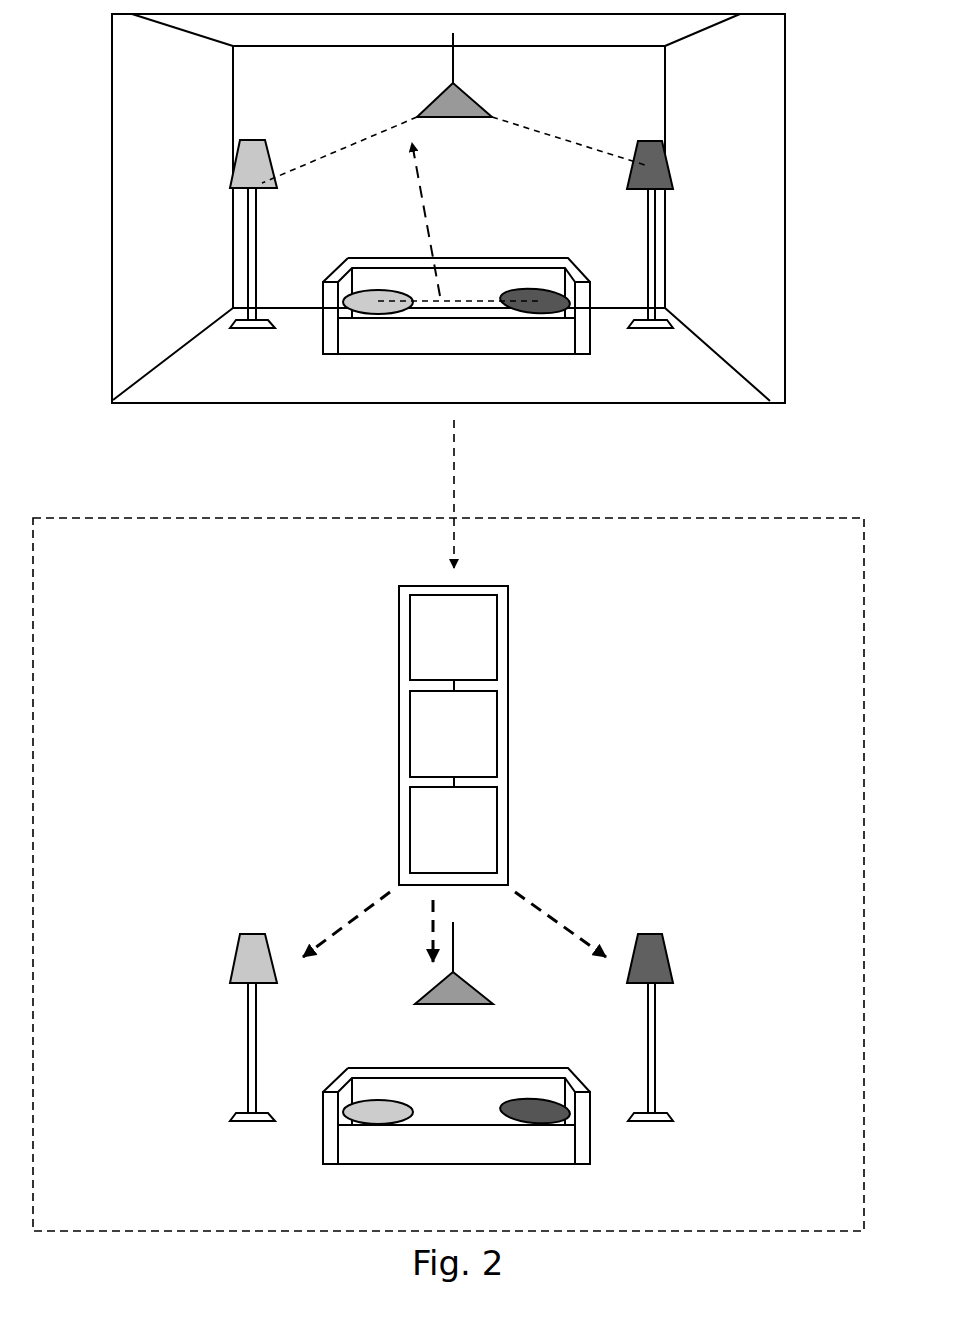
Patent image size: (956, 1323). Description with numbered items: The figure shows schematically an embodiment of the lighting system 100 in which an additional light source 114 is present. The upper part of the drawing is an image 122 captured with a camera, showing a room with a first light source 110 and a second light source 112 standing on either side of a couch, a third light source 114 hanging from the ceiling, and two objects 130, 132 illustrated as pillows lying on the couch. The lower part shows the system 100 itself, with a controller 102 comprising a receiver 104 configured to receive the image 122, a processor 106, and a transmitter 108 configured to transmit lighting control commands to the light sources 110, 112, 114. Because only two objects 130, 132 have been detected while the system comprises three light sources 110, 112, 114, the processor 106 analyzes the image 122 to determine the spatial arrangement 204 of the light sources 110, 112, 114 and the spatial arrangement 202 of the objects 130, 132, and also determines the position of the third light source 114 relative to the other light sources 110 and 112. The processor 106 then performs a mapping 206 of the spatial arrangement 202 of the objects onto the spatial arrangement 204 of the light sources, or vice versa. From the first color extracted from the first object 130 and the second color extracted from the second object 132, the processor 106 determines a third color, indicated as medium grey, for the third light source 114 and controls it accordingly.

The lighting system 100 is at (821, 1134).
The controller 102 is at (394, 725).
The receiver 104 is at (420, 636).
The processor 106 is at (420, 737).
The transmitter 108 is at (420, 833).
The first light source 110 is at (250, 165).
The second light source 112 is at (657, 169).
The third light source 114 is at (465, 105).
The image 122 is at (684, 421).
The first object 130 is at (545, 306).
The second object 132 is at (370, 302).
The spatial arrangement of the objects 202 is at (472, 300).
The spatial arrangement of the light sources 204 is at (600, 148).
The mapping 206 is at (430, 230).